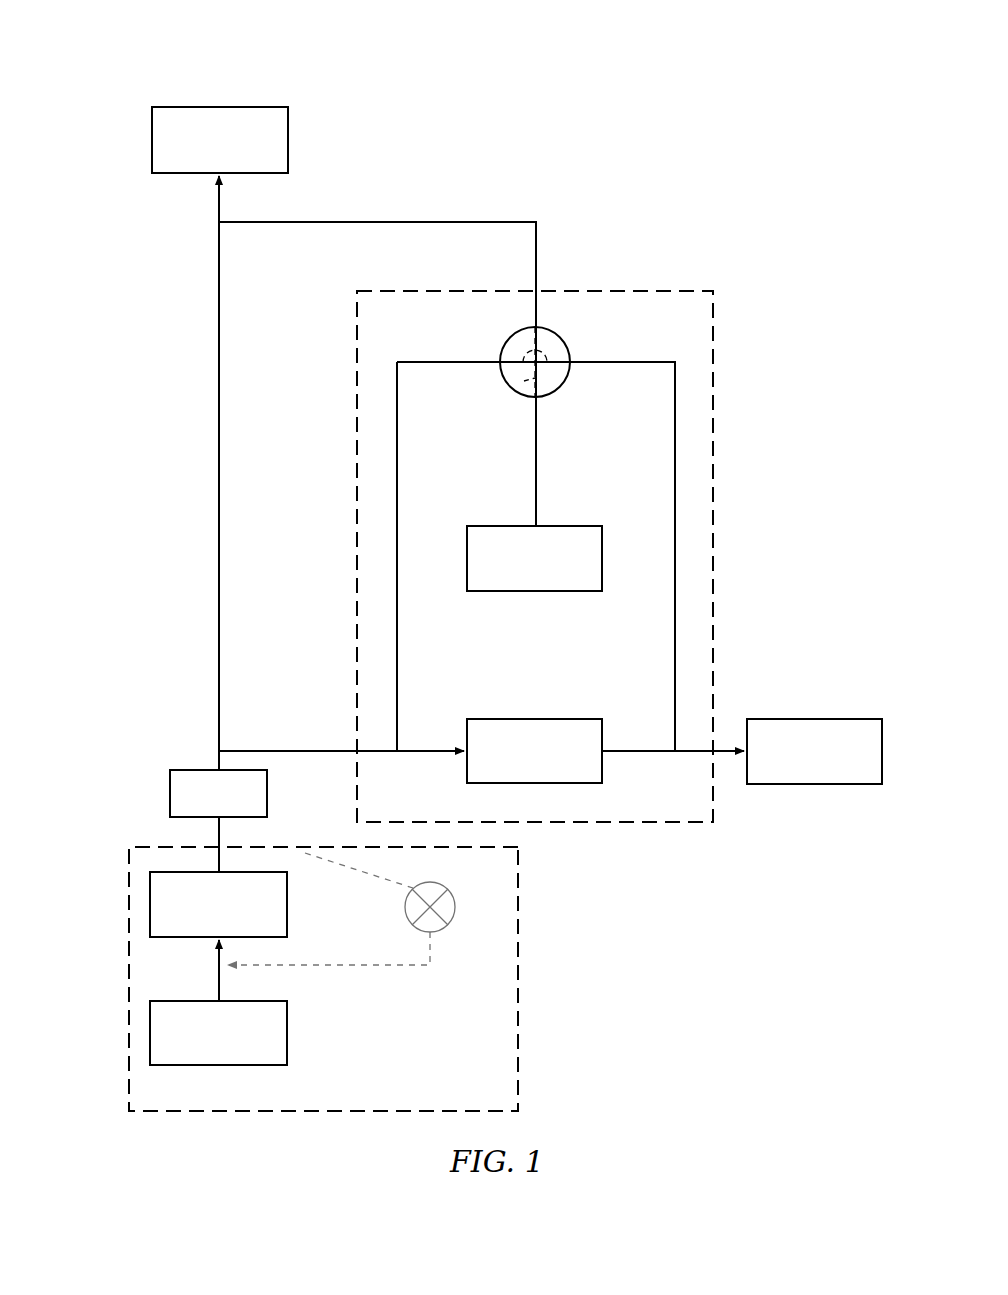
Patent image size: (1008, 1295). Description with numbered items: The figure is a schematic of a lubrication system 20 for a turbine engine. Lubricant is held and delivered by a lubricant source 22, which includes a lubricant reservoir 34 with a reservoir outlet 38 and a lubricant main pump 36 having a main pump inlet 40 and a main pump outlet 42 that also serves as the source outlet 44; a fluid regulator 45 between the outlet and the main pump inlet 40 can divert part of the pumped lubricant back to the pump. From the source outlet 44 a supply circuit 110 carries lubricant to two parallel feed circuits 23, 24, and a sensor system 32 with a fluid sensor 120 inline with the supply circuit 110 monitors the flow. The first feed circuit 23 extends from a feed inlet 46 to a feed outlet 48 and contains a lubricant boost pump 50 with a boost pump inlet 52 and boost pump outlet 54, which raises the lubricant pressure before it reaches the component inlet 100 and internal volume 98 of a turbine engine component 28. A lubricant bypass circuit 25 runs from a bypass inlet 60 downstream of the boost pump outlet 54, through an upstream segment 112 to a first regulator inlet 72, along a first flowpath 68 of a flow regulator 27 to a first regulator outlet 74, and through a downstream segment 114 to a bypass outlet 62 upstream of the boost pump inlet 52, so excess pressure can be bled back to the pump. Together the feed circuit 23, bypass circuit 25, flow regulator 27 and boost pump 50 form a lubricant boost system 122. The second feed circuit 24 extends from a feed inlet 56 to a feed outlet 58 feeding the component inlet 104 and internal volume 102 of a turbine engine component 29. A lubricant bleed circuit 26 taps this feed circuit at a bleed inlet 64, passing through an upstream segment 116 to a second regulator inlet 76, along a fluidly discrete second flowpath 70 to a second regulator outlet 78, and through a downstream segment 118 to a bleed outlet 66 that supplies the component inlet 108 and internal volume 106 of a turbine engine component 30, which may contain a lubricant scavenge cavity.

The lubrication system 20 is at (735, 161).
The lubricant source 22 is at (326, 979).
The lubricant feed circuit 23 is at (437, 770).
The lubricant feed circuit 24 is at (163, 473).
The lubricant bypass circuit 25 is at (683, 447).
The lubricant bleed circuit 26 is at (377, 329).
The flow regulator 27 is at (537, 357).
The turbine engine component 28 is at (814, 741).
The turbine engine component 29 is at (266, 93).
The turbine engine component 30 is at (559, 550).
The sensor system 32 is at (176, 780).
The lubricant reservoir 34 is at (292, 1040).
The lubricant main pump 36 is at (292, 898).
The reservoir outlet 38 is at (221, 1000).
The main pump inlet 40 is at (246, 973).
The main pump outlet 42 is at (219, 862).
The source outlet 44 is at (219, 848).
The fluid regulator 45 is at (455, 917).
The feed inlet 46 is at (341, 719).
The feed outlet 48 is at (701, 796).
The lubricant boost pump 50 is at (533, 784).
The boost pump inlet 52 is at (533, 756).
The boost pump outlet 54 is at (535, 768).
The feed inlet 56 is at (224, 749).
The feed outlet 58 is at (163, 473).
The bypass inlet 60 is at (672, 748).
The bypass outlet 62 is at (396, 749).
The bleed inlet 64 is at (377, 337).
The bleed outlet 66 is at (546, 530).
The first flowpath 68 is at (550, 393).
The second flowpath 70 is at (527, 393).
The first regulator inlet 72 is at (556, 393).
The first regulator outlet 74 is at (537, 393).
The second regulator inlet 76 is at (537, 379).
The second regulator outlet 78 is at (538, 392).
The internal volume 98 is at (832, 786).
The component inlet 100 is at (742, 760).
The internal volume 102 is at (288, 128).
The component inlet 104 is at (163, 473).
The internal volume 106 is at (541, 524).
The component inlet 108 is at (538, 525).
The supply circuit 110 is at (213, 761).
The upstream segment 112 is at (594, 556).
The downstream segment 114 is at (347, 556).
The upstream segment 116 is at (377, 337).
The downstream segment 118 is at (534, 443).
The fluid sensor 120 is at (168, 805).
The lubricant boost system 122 is at (593, 556).